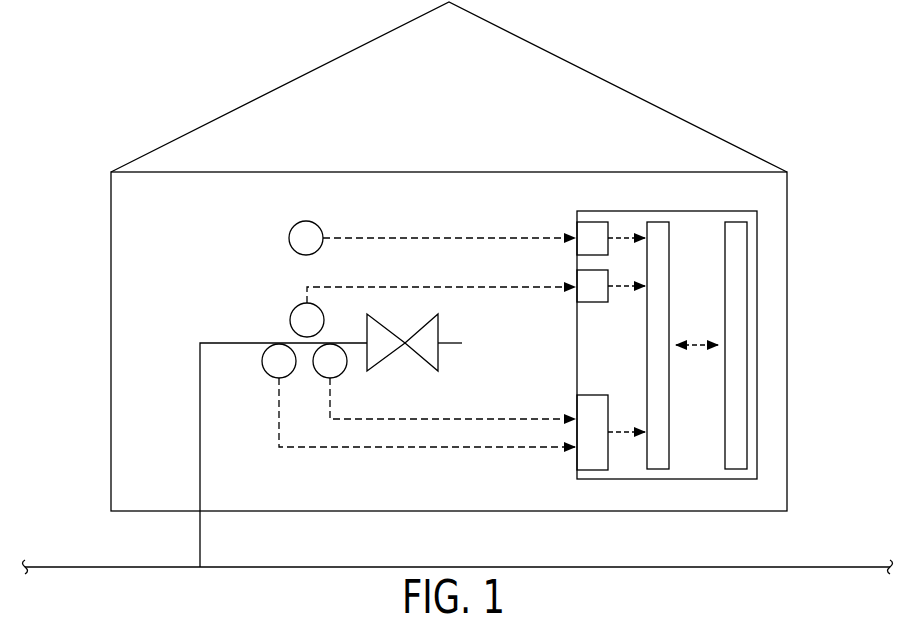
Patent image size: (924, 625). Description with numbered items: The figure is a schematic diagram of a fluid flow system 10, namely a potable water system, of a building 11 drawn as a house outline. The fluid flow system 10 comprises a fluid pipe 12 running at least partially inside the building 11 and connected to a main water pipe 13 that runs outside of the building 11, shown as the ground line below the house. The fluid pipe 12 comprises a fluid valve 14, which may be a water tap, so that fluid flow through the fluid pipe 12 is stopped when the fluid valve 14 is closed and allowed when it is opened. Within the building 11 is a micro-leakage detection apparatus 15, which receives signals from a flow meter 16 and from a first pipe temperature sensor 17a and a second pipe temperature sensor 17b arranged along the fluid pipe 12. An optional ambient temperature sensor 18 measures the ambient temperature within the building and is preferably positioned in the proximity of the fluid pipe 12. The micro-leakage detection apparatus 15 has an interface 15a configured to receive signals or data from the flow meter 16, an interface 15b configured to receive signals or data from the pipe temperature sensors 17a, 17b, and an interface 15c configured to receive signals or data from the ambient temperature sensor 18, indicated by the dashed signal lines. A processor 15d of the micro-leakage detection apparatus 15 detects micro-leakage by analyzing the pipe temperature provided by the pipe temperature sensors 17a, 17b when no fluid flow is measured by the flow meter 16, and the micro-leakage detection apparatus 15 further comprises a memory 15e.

The fluid flow system 10 is at (233, 320).
The building 11 is at (736, 125).
The fluid pipe 12 is at (200, 495).
The main water pipe 13 is at (805, 566).
The fluid valve 14 is at (405, 350).
The micro-leakage detection apparatus 15 is at (761, 366).
The interface 15a is at (587, 296).
The interface 15b is at (585, 403).
The interface 15c is at (587, 232).
The processor 15d is at (658, 469).
The memory 15e is at (735, 469).
The flow meter 16 is at (297, 303).
The first pipe temperature sensor 17a is at (266, 370).
The second pipe temperature sensor 17b is at (316, 370).
The ambient temperature sensor 18 is at (323, 226).